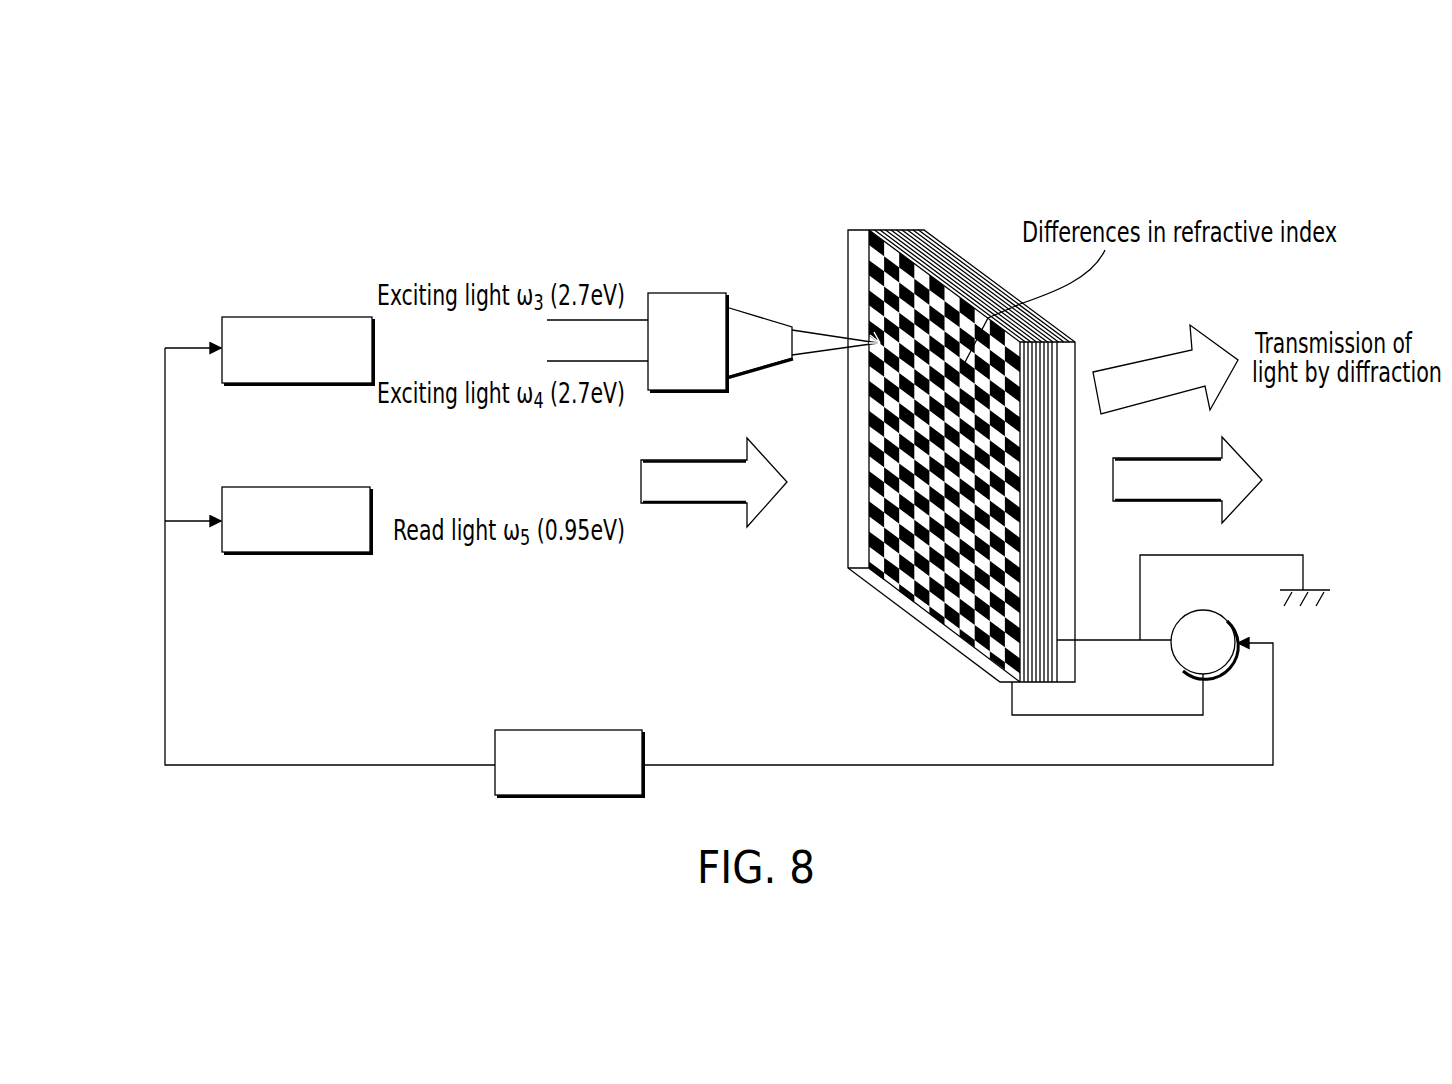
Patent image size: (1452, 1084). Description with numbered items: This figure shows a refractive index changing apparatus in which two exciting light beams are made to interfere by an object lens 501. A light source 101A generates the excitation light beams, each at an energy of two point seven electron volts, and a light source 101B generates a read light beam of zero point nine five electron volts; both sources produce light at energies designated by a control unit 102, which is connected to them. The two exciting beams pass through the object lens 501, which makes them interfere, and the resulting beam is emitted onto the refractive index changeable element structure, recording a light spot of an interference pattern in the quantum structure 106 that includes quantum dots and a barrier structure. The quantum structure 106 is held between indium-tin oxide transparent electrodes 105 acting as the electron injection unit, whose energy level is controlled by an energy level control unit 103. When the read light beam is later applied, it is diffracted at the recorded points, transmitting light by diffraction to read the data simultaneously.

The light source 101A is at (250, 317).
The light source 101B is at (247, 553).
The object lens 501 is at (697, 293).
The control unit 102 is at (598, 730).
The energy level control unit 103 is at (1225, 612).
The transparent electrodes 105 is at (932, 622).
The quantum structure 106 is at (903, 224).